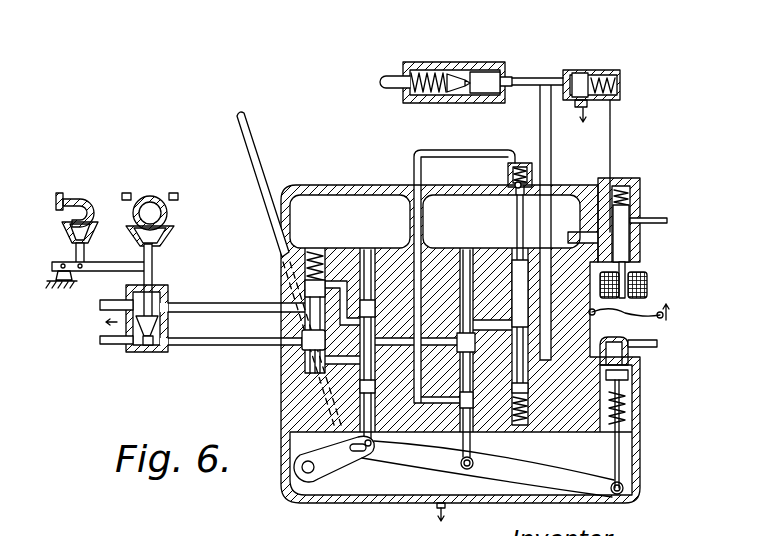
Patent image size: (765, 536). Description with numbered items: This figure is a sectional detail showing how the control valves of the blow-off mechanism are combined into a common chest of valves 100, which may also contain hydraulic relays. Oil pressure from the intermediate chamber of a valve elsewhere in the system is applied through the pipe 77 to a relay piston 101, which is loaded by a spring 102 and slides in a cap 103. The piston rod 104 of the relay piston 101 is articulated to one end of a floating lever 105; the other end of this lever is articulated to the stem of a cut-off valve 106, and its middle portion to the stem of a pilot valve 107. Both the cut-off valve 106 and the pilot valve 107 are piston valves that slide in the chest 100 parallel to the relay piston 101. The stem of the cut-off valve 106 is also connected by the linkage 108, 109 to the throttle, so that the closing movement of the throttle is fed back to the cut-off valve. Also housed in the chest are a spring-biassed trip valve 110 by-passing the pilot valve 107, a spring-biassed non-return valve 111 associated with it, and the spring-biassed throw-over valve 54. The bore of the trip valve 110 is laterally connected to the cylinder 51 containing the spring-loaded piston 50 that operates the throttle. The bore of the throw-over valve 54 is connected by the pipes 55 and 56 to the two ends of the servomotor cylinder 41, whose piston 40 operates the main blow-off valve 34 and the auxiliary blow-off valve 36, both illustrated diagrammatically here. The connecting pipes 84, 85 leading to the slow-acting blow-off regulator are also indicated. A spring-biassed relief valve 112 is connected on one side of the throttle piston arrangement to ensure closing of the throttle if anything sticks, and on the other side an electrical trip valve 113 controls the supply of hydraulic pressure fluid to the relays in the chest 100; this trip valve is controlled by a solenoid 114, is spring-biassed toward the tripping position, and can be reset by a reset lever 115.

The main blow-off valve 34 is at (147, 200).
The auxiliary blow-off valve 36 is at (75, 200).
The piston 40 is at (170, 322).
The servomotor cylinder 41 is at (141, 350).
The spring-loaded piston 50 is at (461, 74).
The cylinder 51 is at (505, 52).
The throw-over valve 54 is at (305, 347).
The pipe 55 is at (213, 348).
The pipe 56 is at (195, 306).
The pipe 77 is at (648, 342).
The connecting pipe 84 is at (112, 345).
The connecting pipe 85 is at (110, 305).
The chest of valves 100 is at (355, 175).
The relay piston 101 is at (620, 377).
The spring 102 is at (623, 415).
The cap 103 is at (622, 352).
The piston rod 104 is at (622, 458).
The floating lever 105 is at (422, 457).
The cut-off valve 106 is at (362, 387).
The pilot valve 107 is at (474, 400).
The linkage 108 is at (342, 460).
The linkage 109 is at (250, 133).
The trip valve 110 is at (522, 387).
The non-return valve 111 is at (530, 163).
The relief valve 112 is at (587, 73).
The electrical trip valve 113 is at (623, 212).
The solenoid 114 is at (625, 273).
The reset lever 115 is at (643, 298).